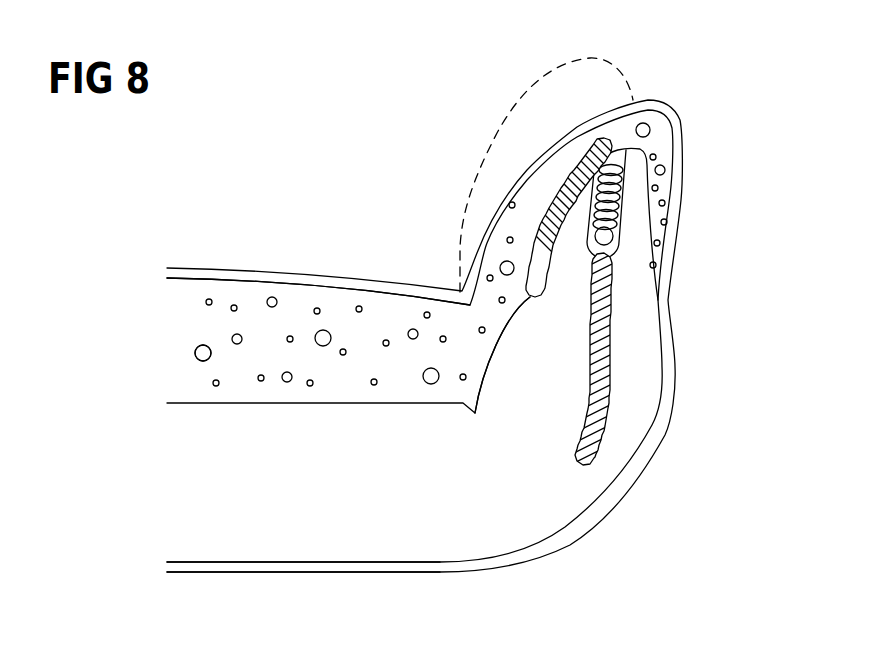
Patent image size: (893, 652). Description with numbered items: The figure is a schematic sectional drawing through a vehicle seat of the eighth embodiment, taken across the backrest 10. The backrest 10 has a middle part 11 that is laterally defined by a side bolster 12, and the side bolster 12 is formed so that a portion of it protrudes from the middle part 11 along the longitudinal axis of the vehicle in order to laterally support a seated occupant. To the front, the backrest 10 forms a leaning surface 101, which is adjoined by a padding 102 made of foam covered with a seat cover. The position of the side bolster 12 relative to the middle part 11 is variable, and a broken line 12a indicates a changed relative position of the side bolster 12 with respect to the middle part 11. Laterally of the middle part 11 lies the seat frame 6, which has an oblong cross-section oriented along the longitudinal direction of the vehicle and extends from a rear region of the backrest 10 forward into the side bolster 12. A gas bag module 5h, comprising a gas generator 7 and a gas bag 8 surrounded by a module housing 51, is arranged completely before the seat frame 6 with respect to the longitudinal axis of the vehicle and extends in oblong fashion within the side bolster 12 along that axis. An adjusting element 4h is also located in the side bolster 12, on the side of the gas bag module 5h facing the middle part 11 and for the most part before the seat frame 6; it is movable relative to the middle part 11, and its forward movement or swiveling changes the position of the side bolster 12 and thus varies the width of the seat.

The backrest 10 is at (603, 537).
The middle part 11 is at (220, 268).
The leaning surface 101 is at (280, 273).
The padding 102 is at (198, 332).
The side bolster 12 is at (487, 210).
The broken line 12a is at (513, 95).
The adjusting element 4h is at (537, 248).
The gas bag module 5h is at (625, 212).
The module housing 51 is at (627, 187).
The seat frame 6 is at (597, 443).
The gas generator 7 is at (592, 220).
The gas bag 8 is at (596, 185).